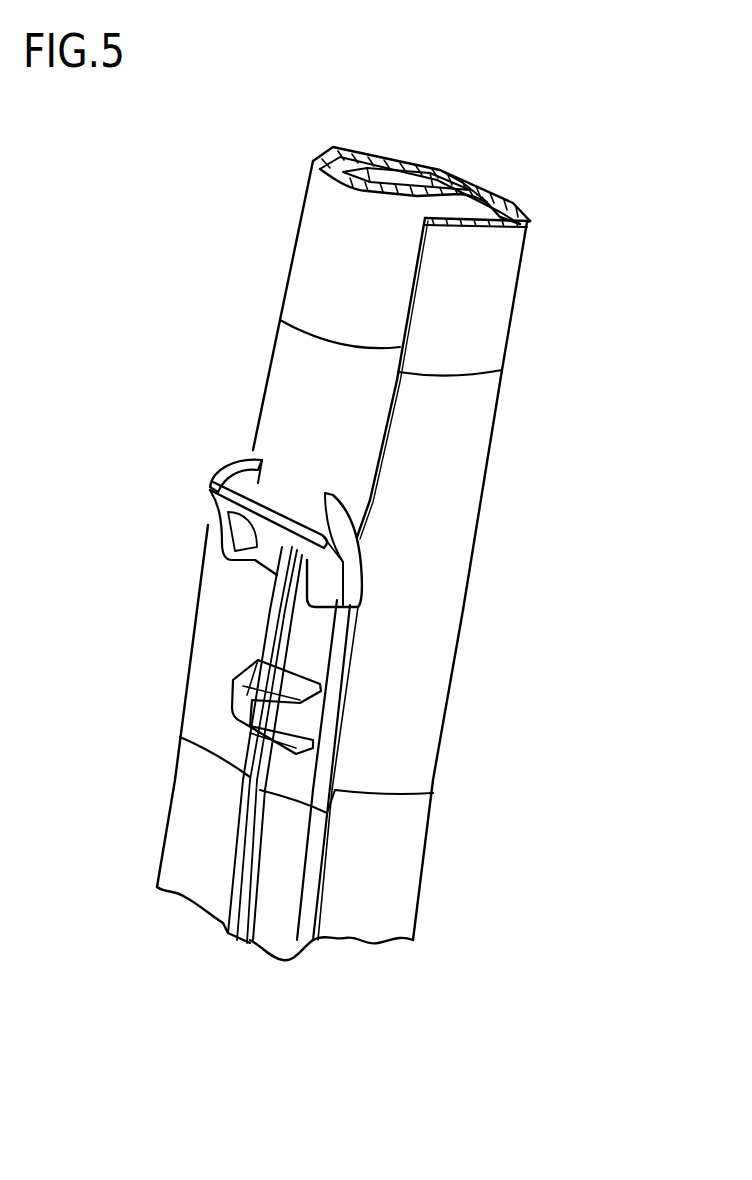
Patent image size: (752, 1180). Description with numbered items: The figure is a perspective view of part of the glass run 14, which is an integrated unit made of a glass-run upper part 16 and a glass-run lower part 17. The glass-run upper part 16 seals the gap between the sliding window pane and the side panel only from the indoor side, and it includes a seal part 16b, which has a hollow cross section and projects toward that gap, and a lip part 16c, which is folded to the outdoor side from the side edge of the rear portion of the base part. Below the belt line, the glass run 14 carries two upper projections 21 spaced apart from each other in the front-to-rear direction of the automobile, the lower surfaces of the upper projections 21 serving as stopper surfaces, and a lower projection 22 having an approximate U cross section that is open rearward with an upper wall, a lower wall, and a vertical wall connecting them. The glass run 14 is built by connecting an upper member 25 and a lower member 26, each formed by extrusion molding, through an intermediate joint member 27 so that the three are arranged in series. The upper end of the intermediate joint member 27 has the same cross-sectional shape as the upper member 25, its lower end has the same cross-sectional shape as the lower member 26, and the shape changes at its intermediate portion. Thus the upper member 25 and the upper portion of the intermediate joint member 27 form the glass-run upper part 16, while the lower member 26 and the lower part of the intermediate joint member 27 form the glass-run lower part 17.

The glass run 14 is at (490, 462).
The glass-run upper part 16 is at (275, 357).
The seal part 16b is at (327, 227).
The lip part 16c is at (428, 302).
The glass-run lower part 17 is at (163, 827).
The upper projections 21 is at (223, 552).
The lower projection 22 is at (230, 688).
The upper member 25 is at (522, 263).
The lower member 26 is at (423, 870).
The intermediate joint member 27 is at (465, 607).